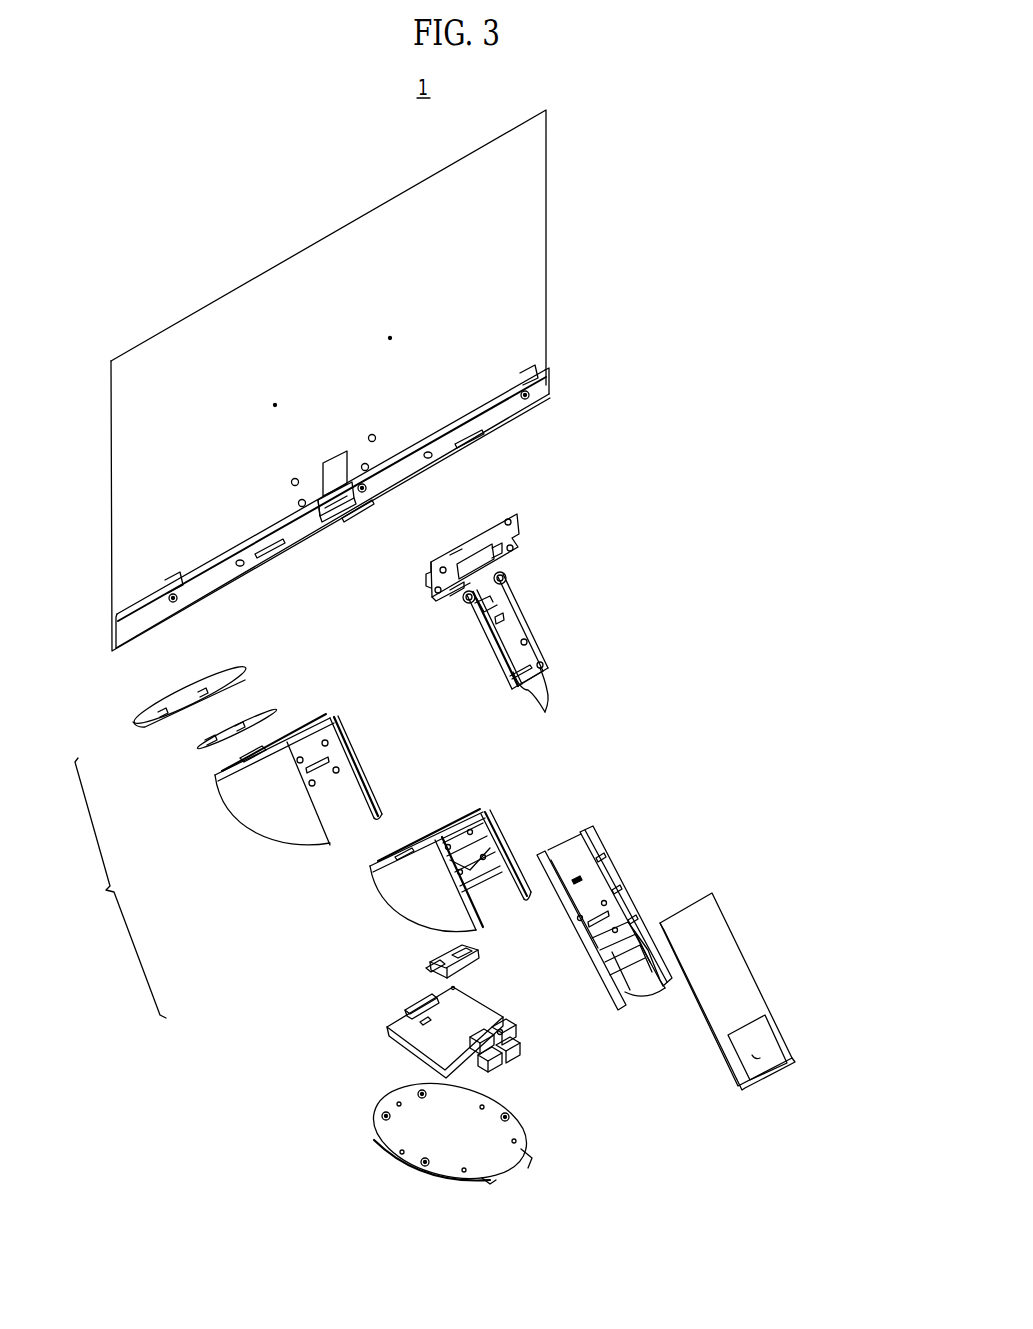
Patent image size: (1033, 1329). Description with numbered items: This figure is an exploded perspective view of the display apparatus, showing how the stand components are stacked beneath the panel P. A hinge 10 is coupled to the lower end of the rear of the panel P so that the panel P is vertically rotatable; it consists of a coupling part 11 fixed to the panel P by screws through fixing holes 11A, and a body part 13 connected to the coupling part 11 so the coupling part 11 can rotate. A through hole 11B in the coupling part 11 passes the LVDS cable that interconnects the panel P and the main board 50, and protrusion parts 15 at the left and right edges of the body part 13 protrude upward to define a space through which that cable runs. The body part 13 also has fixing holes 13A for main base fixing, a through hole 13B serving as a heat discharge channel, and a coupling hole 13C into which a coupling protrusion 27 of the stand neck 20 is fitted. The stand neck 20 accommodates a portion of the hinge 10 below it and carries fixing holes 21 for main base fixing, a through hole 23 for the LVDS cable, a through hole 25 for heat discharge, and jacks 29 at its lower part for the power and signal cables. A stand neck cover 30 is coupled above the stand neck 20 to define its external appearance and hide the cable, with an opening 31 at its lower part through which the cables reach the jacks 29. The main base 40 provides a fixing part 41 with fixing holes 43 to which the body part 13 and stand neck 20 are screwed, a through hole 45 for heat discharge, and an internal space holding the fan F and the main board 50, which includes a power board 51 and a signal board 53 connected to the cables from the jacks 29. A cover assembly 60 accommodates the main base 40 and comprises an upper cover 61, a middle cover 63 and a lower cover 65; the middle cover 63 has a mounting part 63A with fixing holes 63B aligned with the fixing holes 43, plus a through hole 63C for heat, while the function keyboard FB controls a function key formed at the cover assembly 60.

The panel P is at (283, 258).
The hinge 10 is at (516, 601).
The coupling part 11 is at (510, 543).
The fixing holes 11A is at (520, 555).
The through hole 11B is at (480, 552).
The body part 13 is at (516, 630).
The fixing holes 13A is at (535, 636).
The through hole 13B is at (542, 659).
The coupling hole 13C is at (492, 622).
The protrusion parts 15 is at (549, 692).
The stand neck 20 is at (610, 924).
The fixing holes 21 is at (605, 900).
The through hole 23 is at (590, 948).
The through hole 25 is at (608, 930).
The coupling protrusion 27 is at (572, 878).
The jacks 29 is at (638, 985).
The stand neck cover 30 is at (742, 999).
The opening 31 is at (778, 1062).
The main base 40 is at (421, 855).
The fixing part 41 is at (475, 868).
The fixing holes 43 is at (470, 825).
The through hole 45 is at (487, 830).
The main board 50 is at (451, 1023).
The power board 51 is at (405, 1022).
The signal board 53 is at (440, 1065).
The cover assembly 60 is at (306, 926).
The upper cover 61 is at (135, 720).
The middle cover 63 is at (284, 787).
The mounting part 63A is at (312, 783).
The fixing holes 63B is at (332, 740).
The through hole 63C is at (338, 765).
The lower cover 65 is at (390, 1133).
The fan F is at (430, 960).
The function keyboard FB is at (250, 722).